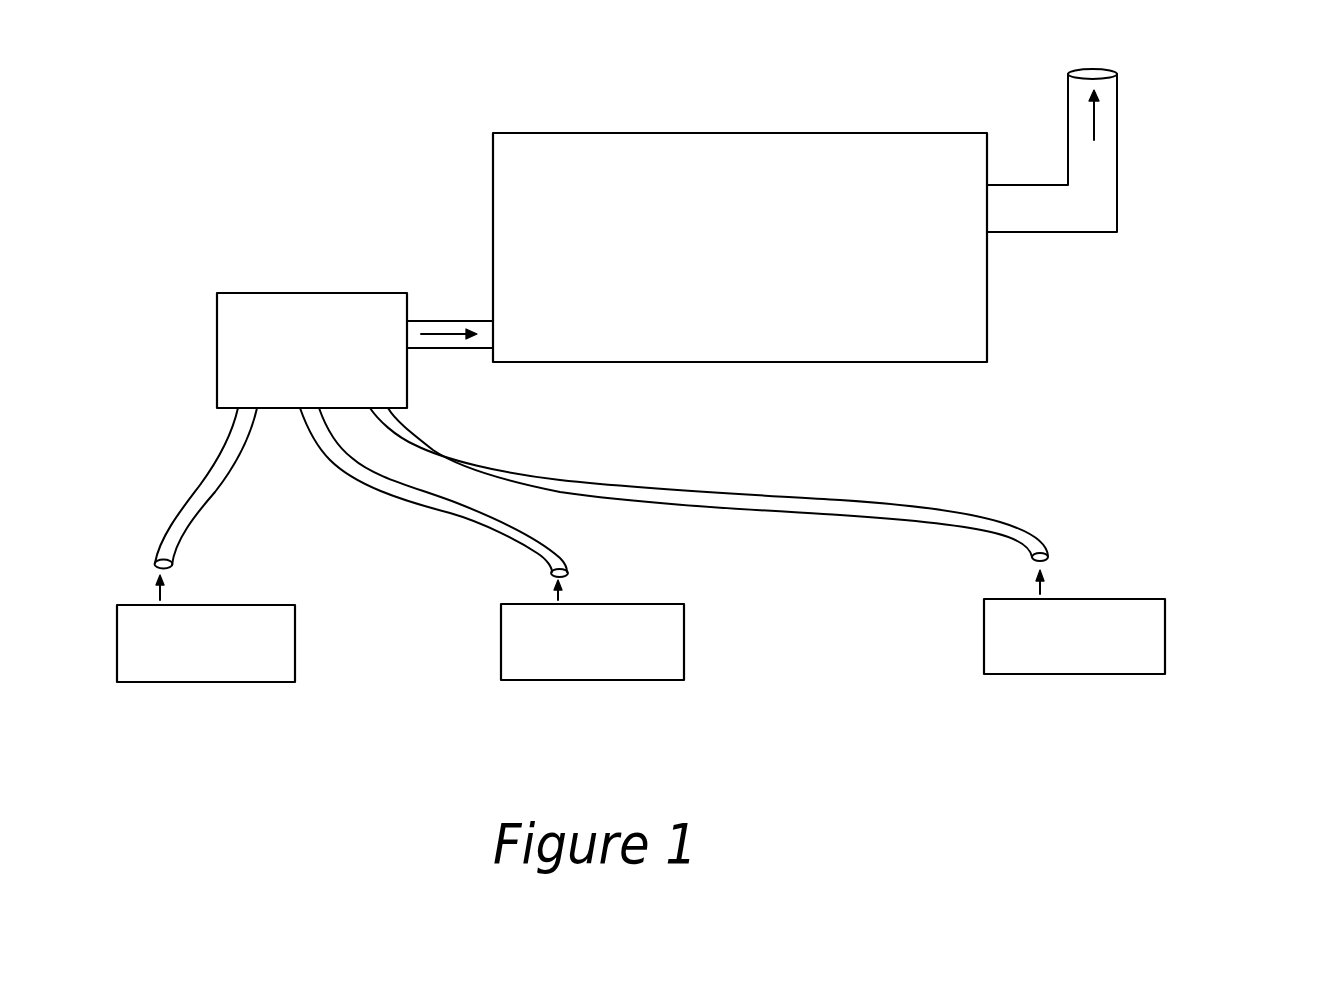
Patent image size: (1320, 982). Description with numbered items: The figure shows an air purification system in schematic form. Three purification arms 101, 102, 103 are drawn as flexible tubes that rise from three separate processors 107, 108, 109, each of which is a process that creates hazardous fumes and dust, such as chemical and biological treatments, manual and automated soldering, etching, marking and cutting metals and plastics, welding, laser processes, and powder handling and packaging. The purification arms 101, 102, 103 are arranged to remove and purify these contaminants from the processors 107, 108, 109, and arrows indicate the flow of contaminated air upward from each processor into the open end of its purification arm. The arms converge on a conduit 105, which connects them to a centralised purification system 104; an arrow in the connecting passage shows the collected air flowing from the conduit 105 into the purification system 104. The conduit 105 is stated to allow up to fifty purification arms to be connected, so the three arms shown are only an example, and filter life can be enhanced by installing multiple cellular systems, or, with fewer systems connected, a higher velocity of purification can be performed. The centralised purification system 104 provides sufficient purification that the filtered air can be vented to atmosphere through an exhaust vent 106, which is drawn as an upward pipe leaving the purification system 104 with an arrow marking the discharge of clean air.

The purification arm 101 is at (166, 553).
The purification arm 102 is at (542, 553).
The purification arm 103 is at (1027, 542).
The centralised purification system 104 is at (540, 195).
The conduit 105 is at (332, 318).
The exhaust vent 106 is at (1100, 175).
The processor 107 is at (250, 636).
The processor 108 is at (652, 634).
The processor 109 is at (1137, 628).